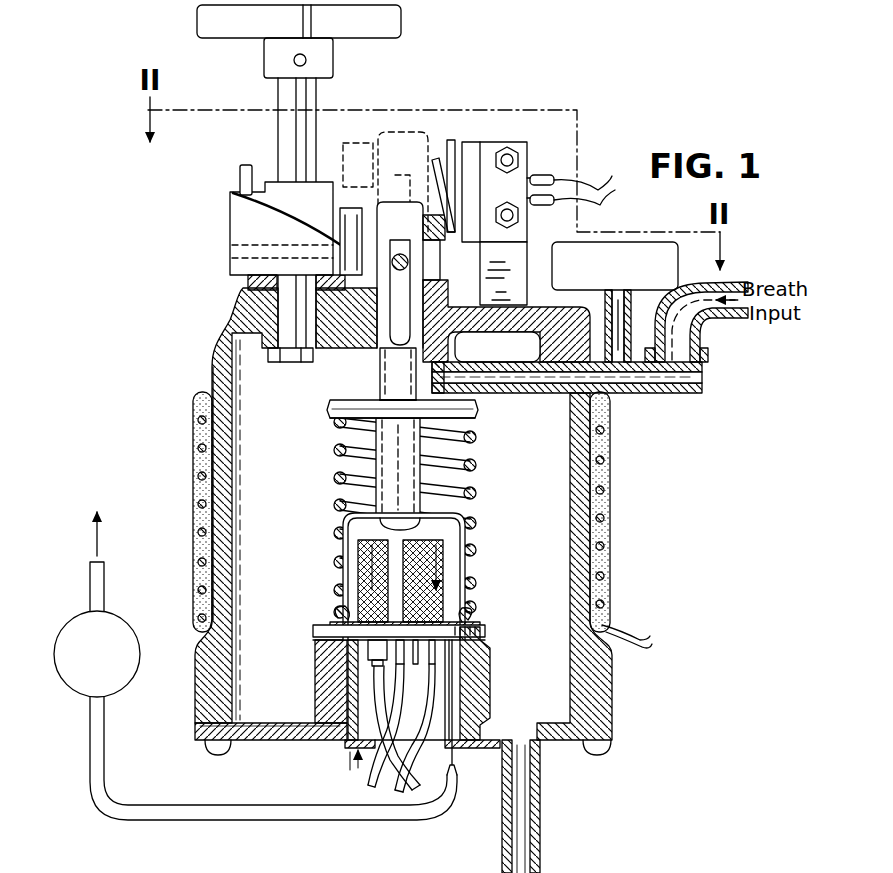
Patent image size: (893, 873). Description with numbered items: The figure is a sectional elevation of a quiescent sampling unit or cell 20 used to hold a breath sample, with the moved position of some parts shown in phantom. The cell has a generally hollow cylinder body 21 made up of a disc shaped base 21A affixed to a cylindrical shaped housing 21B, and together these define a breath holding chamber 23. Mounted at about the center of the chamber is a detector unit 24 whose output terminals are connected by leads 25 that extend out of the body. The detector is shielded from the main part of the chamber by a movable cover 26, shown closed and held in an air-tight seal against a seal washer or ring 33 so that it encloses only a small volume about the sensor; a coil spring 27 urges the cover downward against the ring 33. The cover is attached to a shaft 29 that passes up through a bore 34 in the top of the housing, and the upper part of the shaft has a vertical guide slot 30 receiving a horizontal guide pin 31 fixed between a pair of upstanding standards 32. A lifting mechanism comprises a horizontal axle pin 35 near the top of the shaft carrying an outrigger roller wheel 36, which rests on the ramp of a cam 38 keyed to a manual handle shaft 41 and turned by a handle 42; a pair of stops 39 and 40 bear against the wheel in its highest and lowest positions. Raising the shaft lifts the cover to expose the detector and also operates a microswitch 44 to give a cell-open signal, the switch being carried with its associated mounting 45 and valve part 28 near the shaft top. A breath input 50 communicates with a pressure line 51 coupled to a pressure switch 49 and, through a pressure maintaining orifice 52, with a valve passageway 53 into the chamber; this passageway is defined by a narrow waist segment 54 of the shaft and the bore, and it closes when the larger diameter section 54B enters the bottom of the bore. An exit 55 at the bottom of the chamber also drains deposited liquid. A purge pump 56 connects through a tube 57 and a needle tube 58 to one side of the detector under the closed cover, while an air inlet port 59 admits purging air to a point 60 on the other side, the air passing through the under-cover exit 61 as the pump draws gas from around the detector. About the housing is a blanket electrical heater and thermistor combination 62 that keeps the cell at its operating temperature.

The quiescent sampling unit or cell 20 is at (193, 281).
The hollow cylinder body 21 is at (203, 315).
The disc shaped base 21A is at (258, 733).
The cylindrical shaped housing 21B is at (222, 357).
The breath holding chamber 23 is at (527, 478).
The detector unit 24 is at (445, 586).
The leads 25 is at (410, 710).
The shield or cover 26 is at (457, 523).
The coil spring 27 is at (479, 438).
The valve body 28 is at (428, 276).
The shaft 29 is at (447, 422).
The vertical guide slot 30 is at (403, 310).
The horizontal guide pin 31 is at (404, 200).
The upstanding standards 32 is at (470, 240).
The seal washer or ring 33 is at (485, 620).
The bore 34 is at (393, 395).
The horizontal axle pin 35 is at (400, 250).
The outrigger roller wheel 36 is at (350, 212).
The cam 38 is at (250, 221).
The stop 39 is at (246, 165).
The stop 40 is at (360, 255).
The manual handle shaft 41 is at (295, 94).
The handle 42 is at (390, 24).
The microswitch 44 is at (518, 143).
The switch bracket 45 is at (512, 258).
The pressure switch 49 is at (660, 244).
The breath input 50 is at (700, 337).
The pressure line 51 is at (632, 340).
The pressure maintaining orifice 52 is at (448, 378).
The valve passageway 53 is at (457, 357).
The waist segment 54 is at (370, 390).
The larger diameter section 54B is at (395, 421).
The exit 55 is at (540, 778).
The purge pump 56 is at (124, 624).
The tube 57 is at (295, 812).
The needle tube 58 is at (455, 688).
The air inlet port 59 is at (342, 748).
The point 60 is at (347, 635).
The under-cover exit 61 is at (470, 606).
The blanket electrical heater and temperature sensing thermistor combination 62 is at (615, 498).